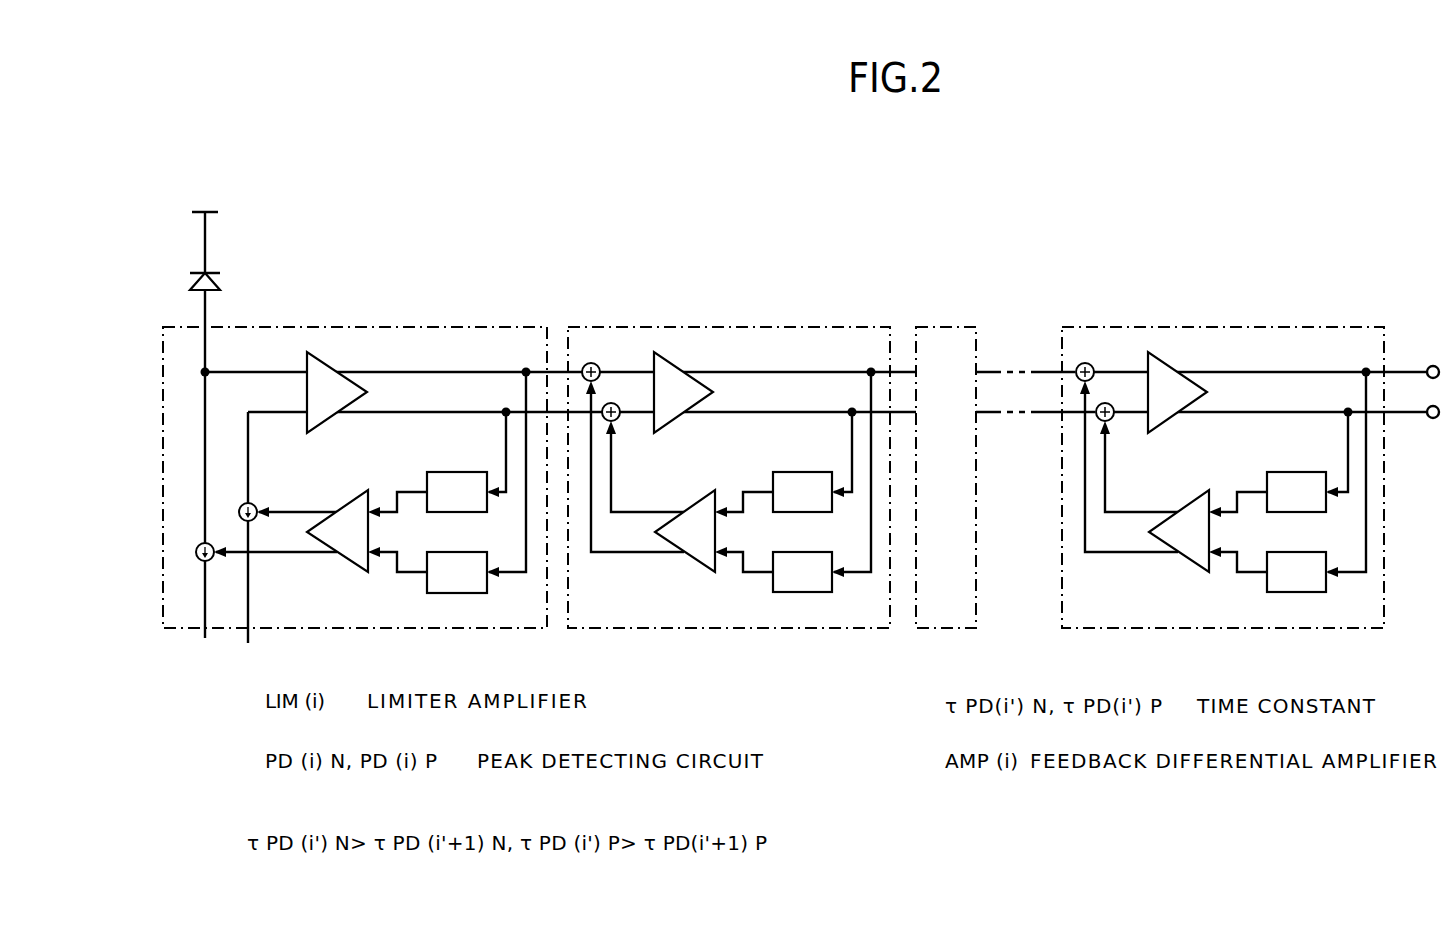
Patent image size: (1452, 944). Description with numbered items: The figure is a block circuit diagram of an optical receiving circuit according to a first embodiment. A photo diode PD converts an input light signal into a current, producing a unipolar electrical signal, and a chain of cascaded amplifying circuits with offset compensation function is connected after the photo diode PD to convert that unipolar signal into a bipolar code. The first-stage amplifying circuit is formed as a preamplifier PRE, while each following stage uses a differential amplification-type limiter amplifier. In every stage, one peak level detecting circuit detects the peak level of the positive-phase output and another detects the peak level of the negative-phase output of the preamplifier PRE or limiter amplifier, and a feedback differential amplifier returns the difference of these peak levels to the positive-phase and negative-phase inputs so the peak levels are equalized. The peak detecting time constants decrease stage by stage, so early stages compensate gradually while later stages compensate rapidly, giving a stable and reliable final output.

The photo diode PD is at (216, 279).
The preamplifier PRE is at (330, 371).